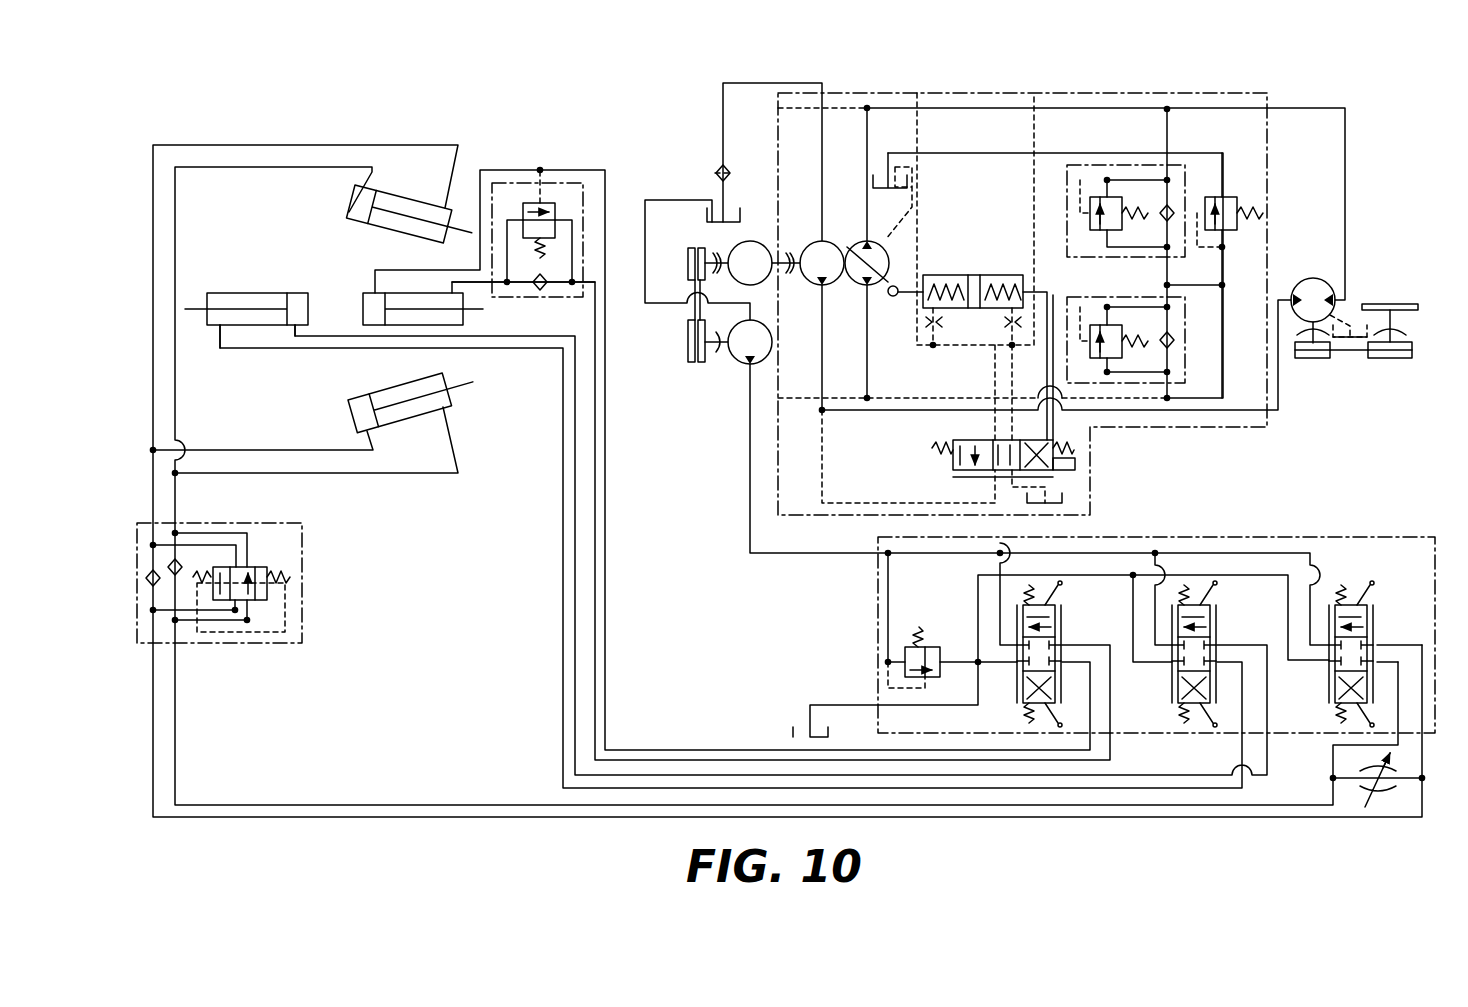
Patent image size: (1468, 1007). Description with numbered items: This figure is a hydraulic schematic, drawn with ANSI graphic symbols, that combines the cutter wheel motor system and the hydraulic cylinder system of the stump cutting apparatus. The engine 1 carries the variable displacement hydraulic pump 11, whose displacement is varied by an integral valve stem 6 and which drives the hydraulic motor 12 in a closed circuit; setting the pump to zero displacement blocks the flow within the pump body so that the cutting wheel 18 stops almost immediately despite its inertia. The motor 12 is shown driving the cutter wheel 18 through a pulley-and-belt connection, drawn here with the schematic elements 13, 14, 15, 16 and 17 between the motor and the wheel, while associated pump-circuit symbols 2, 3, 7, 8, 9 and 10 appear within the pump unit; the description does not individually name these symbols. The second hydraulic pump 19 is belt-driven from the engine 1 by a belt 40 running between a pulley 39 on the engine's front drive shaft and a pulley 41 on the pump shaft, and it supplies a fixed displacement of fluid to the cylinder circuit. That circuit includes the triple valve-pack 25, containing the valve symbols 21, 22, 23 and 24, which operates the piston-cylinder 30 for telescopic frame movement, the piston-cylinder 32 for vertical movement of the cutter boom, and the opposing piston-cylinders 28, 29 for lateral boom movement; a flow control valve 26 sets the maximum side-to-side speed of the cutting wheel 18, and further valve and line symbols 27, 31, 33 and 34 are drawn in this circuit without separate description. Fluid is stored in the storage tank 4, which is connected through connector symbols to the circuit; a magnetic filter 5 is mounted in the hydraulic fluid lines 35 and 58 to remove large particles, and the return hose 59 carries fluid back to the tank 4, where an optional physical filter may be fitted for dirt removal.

The engine 1 is at (732, 252).
The hydraulic pump 2 is at (818, 290).
The variable displacement pump 3 is at (860, 288).
The storage tank 4 is at (747, 212).
The magnetic filter 5 is at (712, 173).
The integral valve stem 6 is at (1063, 474).
The pressure control valve 7 is at (993, 273).
The relief valve 8 is at (1187, 338).
The relief valve 9 is at (1192, 257).
The relief valve 10 is at (1232, 197).
The variable displacement hydraulic pump 11 is at (1177, 432).
The hydraulic motor 12 is at (1314, 272).
The motor drain line 13 is at (1298, 322).
The gear 14 is at (1315, 362).
The shaft 15 is at (1352, 356).
The gear 16 is at (1396, 362).
The shaft 17 is at (1386, 322).
The cutter wheel 18 is at (1411, 302).
The second hydraulic pump 19 is at (745, 366).
The relief valve 21 is at (931, 645).
The directional control valve 22 is at (1062, 628).
The directional control valve 23 is at (1218, 628).
The directional control valve 24 is at (1376, 628).
The triple valve-pack 25 is at (1323, 538).
The flow control valve 26 is at (1390, 792).
The valve unit 27 is at (205, 646).
The piston-cylinder 28 is at (349, 210).
The piston-cylinder 29 is at (350, 397).
The hydraulic piston-cylinder 30 is at (282, 292).
The check valve unit 31 is at (573, 300).
The hydraulic piston-cylinder 32 is at (362, 297).
The hydraulic line 33 is at (753, 604).
The hydraulic line 34 is at (560, 622).
The hydraulic fluid line 35 is at (752, 82).
The pulley 39 is at (685, 268).
The belt 40 is at (686, 313).
The pulley 41 is at (686, 350).
The hydraulic fluid line 58 is at (642, 265).
The return hose 59 is at (845, 702).